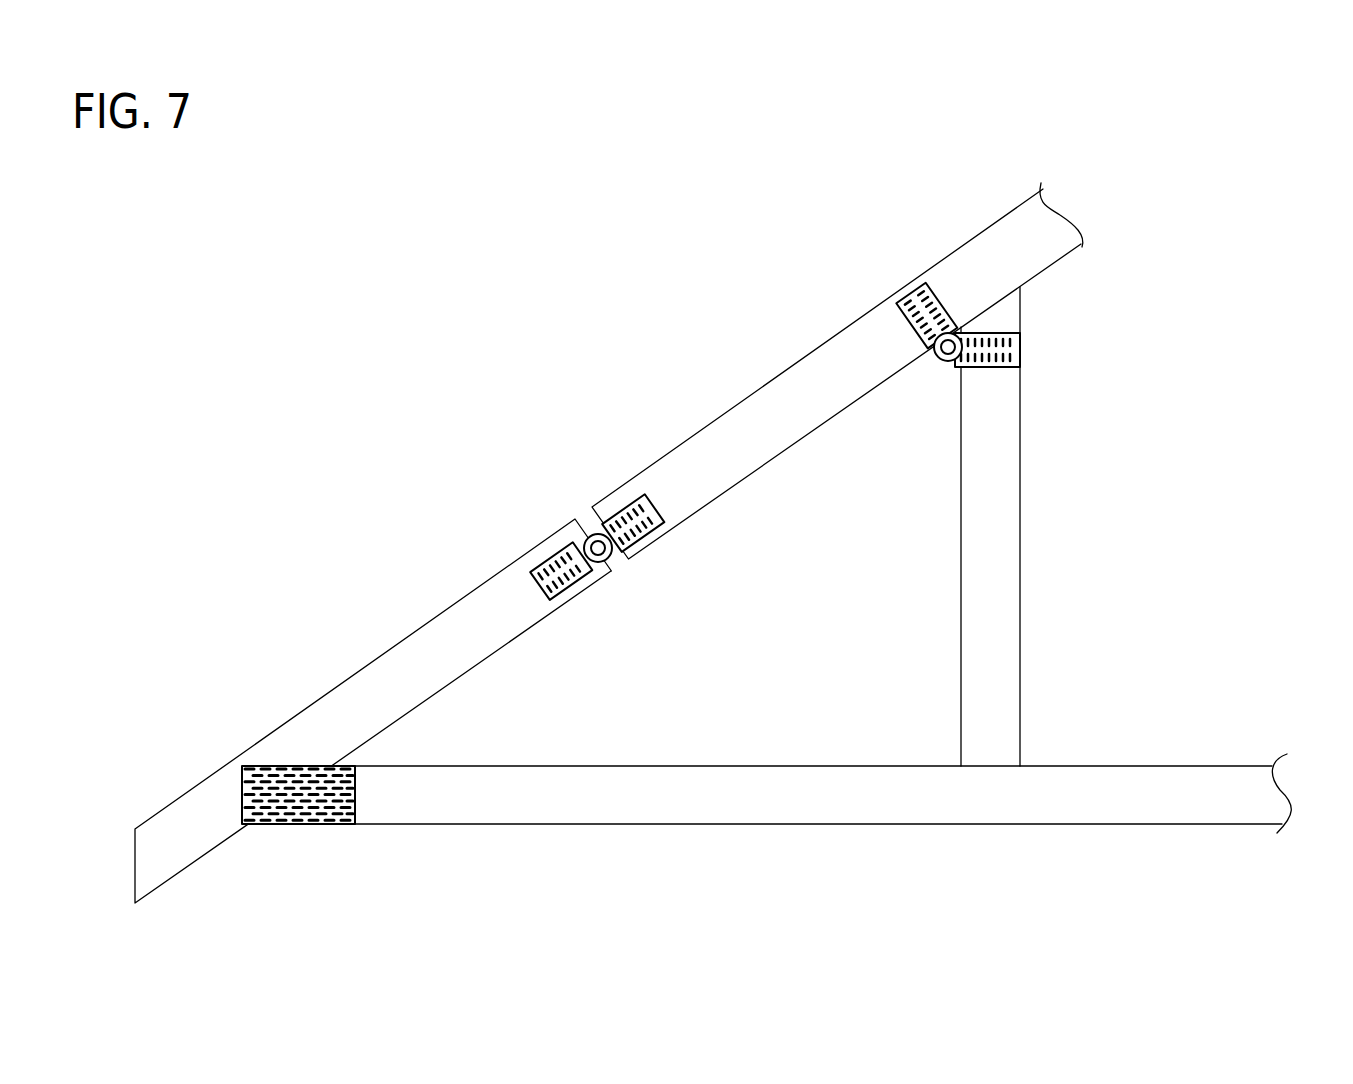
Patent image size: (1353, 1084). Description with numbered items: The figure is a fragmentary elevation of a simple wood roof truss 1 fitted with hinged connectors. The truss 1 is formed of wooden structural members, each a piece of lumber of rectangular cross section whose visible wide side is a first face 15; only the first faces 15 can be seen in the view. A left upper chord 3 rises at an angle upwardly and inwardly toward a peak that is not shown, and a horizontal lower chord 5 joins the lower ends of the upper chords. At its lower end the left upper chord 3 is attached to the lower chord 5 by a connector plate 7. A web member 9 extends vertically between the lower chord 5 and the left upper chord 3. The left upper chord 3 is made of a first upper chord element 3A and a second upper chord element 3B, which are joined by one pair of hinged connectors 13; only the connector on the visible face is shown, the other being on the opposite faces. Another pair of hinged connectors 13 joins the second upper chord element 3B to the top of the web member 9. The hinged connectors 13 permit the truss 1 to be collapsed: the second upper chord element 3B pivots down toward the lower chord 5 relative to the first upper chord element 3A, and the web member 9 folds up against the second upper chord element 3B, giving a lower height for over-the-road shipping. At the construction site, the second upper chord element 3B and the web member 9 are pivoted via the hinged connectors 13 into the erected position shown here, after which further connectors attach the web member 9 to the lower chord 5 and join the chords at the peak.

The roof truss 1 is at (913, 146).
The left upper chord 3 is at (703, 412).
The first upper chord element 3A is at (405, 638).
The second upper chord element 3B is at (760, 468).
The lower chord 5 is at (882, 843).
The connector plate 7 is at (288, 827).
The web member 9 is at (1020, 448).
The hinged connector 13 is at (966, 290).
The first face 15 is at (352, 715).